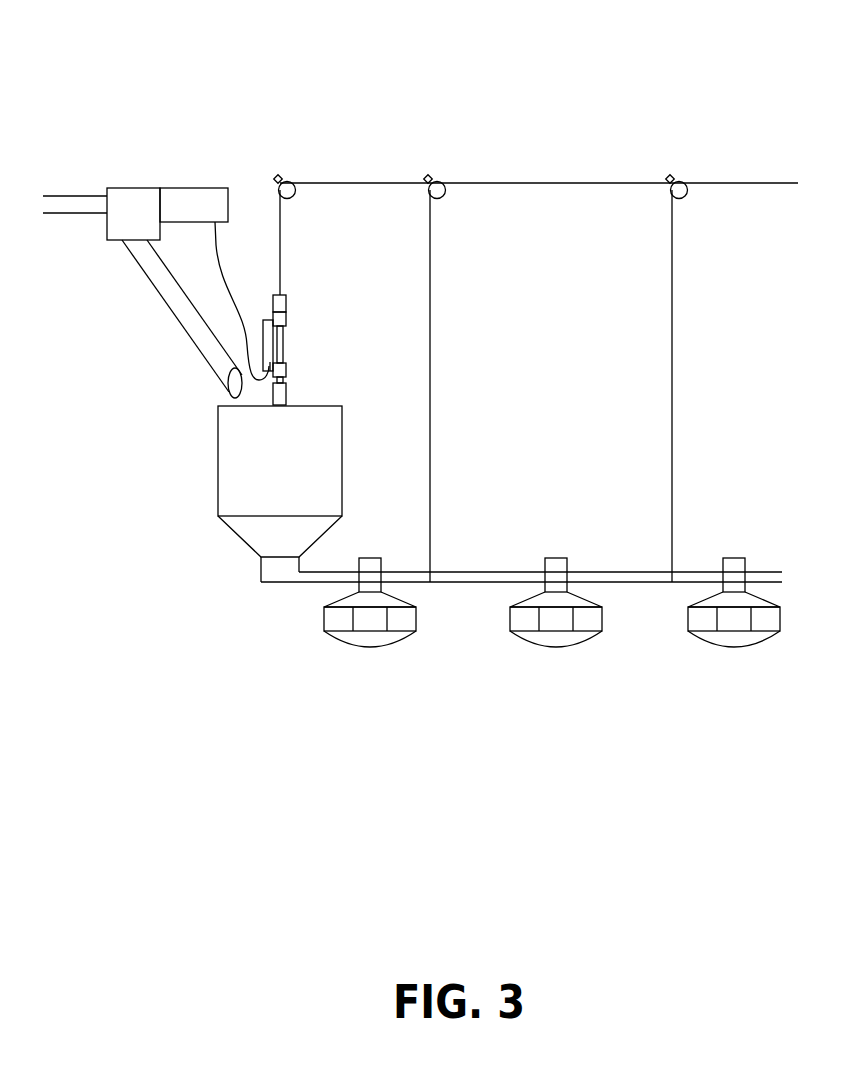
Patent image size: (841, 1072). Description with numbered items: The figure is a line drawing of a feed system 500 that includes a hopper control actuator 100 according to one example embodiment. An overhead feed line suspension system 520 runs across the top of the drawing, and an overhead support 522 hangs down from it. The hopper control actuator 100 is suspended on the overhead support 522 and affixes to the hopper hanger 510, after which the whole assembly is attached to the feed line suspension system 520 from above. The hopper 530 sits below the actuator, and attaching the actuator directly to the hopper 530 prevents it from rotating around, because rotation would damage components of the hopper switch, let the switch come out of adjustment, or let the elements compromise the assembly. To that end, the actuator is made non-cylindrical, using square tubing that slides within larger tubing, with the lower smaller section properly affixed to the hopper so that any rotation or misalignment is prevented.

The feed system 500 is at (645, 92).
The feed line suspension system 520 is at (347, 182).
The overhead support 522 is at (280, 243).
The hopper control actuator 100 is at (286, 298).
The hopper hanger 510 is at (286, 398).
The hopper 530 is at (218, 461).